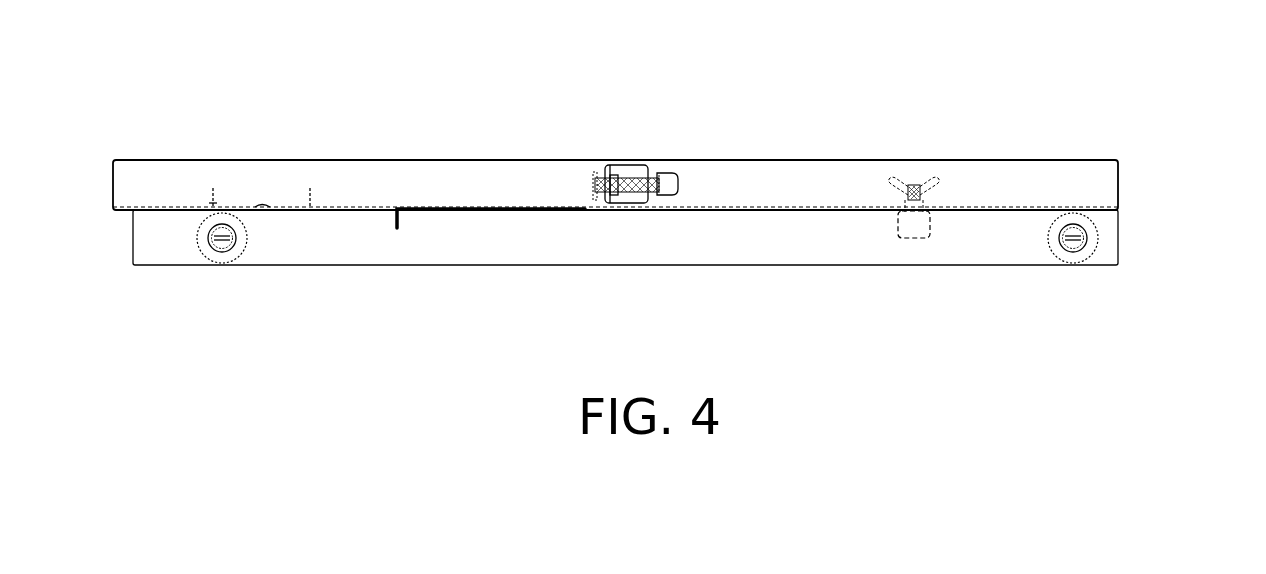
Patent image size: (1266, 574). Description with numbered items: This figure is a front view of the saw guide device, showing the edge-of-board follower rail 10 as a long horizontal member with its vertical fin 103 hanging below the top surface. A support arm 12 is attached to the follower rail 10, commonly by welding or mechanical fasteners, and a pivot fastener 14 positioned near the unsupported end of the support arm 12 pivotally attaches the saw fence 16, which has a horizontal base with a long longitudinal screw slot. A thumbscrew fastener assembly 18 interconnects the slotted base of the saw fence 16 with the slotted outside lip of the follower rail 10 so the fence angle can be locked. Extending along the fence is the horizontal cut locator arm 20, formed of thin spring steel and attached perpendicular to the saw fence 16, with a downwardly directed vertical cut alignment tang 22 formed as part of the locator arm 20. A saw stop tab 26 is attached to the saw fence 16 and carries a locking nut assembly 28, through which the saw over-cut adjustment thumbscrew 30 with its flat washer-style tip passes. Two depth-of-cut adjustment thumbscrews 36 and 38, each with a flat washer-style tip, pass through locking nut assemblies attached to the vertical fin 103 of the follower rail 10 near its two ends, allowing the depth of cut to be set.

The edge-of-board follower rail 10 is at (783, 245).
The support arm 12 is at (213, 203).
The pivot fastener 14 is at (262, 207).
The pivotally adjustable saw fence 16 is at (1050, 174).
The thumbscrew fastener assembly 18 is at (913, 185).
The horizontal cut locator arm 20 is at (513, 207).
The vertical cut alignment tang 22 is at (395, 227).
The saw stop tab 26 is at (639, 170).
The locking nut assembly 28 is at (613, 175).
The saw over-cut adjustment thumbscrew 30 is at (674, 176).
The depth-of-cut adjustment thumbscrew 36 is at (1057, 248).
The depth-of-cut adjustment thumbscrew 38 is at (207, 247).
The vertical fin 103 is at (1118, 209).